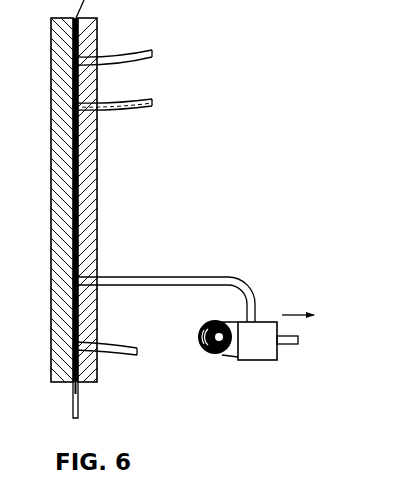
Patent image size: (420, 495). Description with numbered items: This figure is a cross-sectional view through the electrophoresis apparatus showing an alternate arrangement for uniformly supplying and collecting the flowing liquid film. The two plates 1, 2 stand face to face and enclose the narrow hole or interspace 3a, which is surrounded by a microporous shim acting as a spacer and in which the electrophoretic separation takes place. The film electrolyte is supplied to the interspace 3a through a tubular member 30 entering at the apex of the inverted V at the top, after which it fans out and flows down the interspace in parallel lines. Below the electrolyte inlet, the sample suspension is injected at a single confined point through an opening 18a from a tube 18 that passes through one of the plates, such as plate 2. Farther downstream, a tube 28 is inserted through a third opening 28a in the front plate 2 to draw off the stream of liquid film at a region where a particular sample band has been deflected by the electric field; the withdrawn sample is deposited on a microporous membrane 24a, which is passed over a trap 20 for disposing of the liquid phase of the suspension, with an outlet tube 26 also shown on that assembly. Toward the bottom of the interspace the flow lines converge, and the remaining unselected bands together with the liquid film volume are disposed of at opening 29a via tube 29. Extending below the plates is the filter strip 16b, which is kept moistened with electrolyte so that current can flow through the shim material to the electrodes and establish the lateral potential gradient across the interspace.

The plate 1 is at (52, 176).
The plate 2 is at (97, 190).
The interspace 3a is at (76, 100).
The filter strip 16b is at (79, 417).
The tube 18 is at (153, 106).
The opening 18a is at (73, 108).
The trap 20 is at (240, 360).
The microporous membrane 24a is at (263, 322).
The outlet tube 26 is at (295, 345).
The tube 28 is at (210, 278).
The opening 28a is at (73, 283).
The tube 29 is at (142, 341).
The opening 29a is at (73, 345).
The tubular member 30 is at (146, 49).